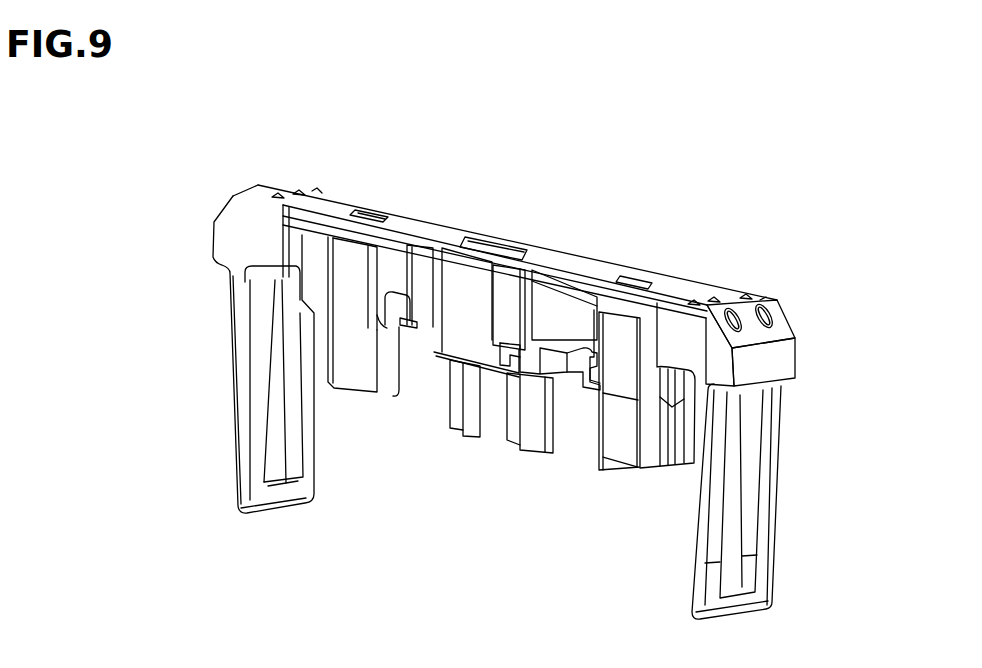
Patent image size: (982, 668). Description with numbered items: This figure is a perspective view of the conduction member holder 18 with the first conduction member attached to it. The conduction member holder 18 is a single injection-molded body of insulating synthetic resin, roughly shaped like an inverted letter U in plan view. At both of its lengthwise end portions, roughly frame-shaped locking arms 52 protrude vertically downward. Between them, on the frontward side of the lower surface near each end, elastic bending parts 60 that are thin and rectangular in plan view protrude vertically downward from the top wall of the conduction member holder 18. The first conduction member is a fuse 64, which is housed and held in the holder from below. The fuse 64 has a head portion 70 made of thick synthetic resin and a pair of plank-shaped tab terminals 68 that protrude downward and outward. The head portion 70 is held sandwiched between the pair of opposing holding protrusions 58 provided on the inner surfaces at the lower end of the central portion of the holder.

The conduction member holder 18 is at (501, 366).
The locking arms 52 is at (205, 336).
The holding protrusions 58 is at (518, 365).
The elastic bending parts 60 is at (357, 322).
The fuse 64 is at (541, 359).
The tab terminals 68 is at (453, 400).
The head portion 70 is at (540, 350).